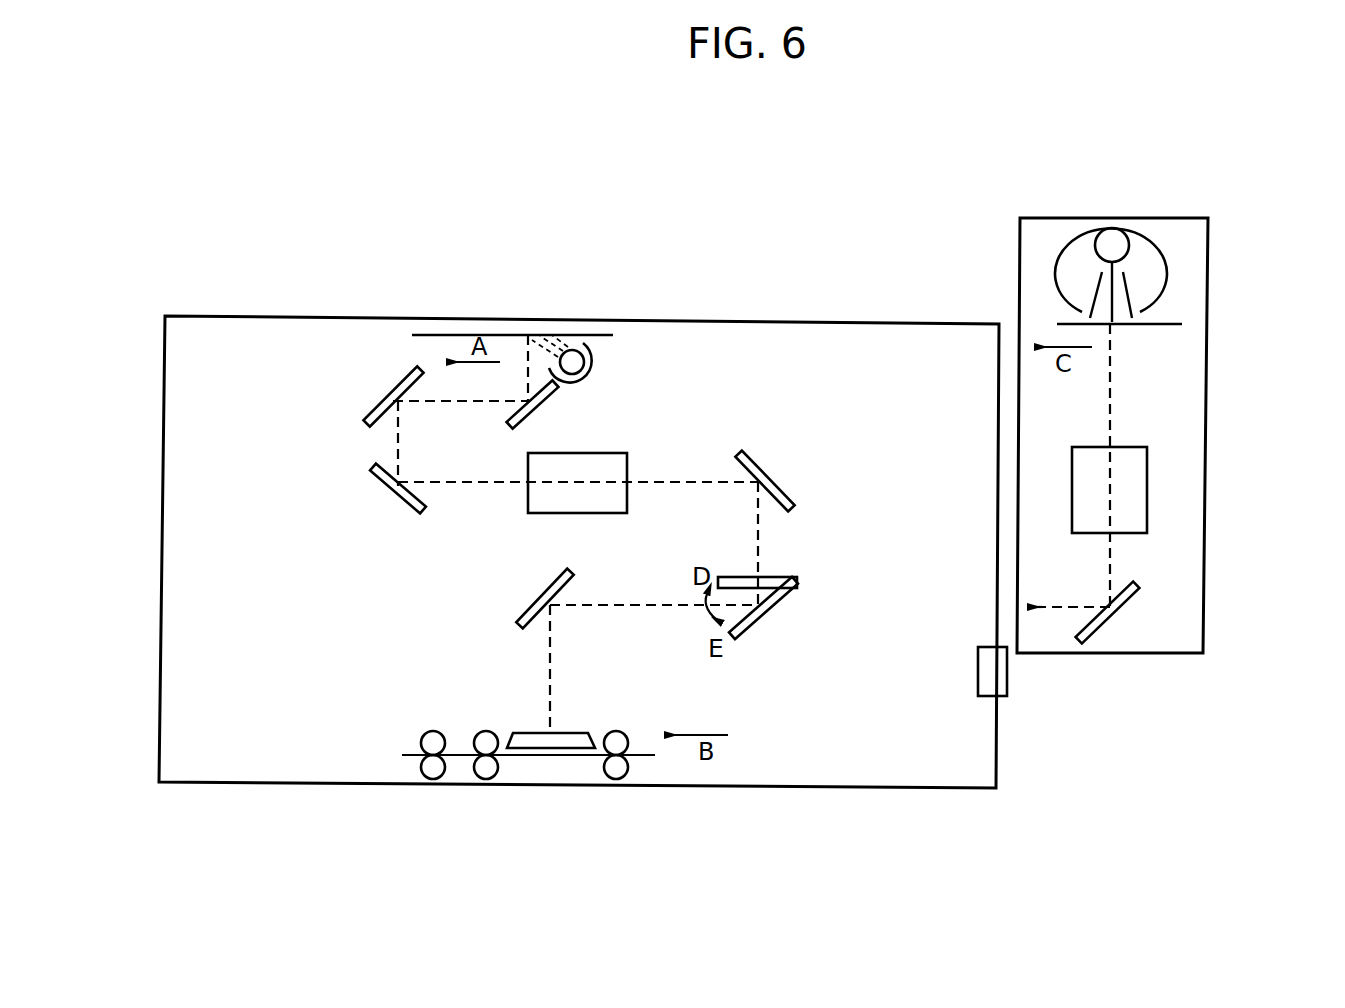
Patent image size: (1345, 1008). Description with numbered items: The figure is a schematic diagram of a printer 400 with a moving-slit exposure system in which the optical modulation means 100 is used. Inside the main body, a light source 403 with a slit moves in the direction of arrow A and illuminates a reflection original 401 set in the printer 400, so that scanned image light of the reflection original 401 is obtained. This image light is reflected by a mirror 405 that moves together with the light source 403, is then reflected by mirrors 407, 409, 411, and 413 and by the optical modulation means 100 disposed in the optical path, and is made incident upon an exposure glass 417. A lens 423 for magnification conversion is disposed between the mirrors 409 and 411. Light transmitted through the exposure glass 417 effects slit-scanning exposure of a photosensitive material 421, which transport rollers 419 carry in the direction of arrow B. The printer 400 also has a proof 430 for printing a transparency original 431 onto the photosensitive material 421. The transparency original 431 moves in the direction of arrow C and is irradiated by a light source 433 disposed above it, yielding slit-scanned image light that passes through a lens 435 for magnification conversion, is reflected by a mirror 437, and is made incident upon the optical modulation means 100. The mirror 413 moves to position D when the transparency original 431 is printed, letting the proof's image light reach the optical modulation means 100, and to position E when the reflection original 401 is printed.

The printer 400 is at (499, 271).
The reflection original 401 is at (548, 335).
The light source 403 is at (603, 363).
The mirror 405 is at (548, 398).
The mirror 407 is at (393, 392).
The mirror 409 is at (385, 487).
The lens for magnification conversion 423 is at (628, 470).
The mirror 411 is at (763, 470).
The mirror 413 is at (770, 577).
The optical modulation means 100 is at (577, 575).
The exposure glass 417 is at (573, 732).
The transport rollers 419 is at (430, 781).
The photosensitive material 421 is at (410, 752).
The proof 430 is at (1105, 198).
The transparency original 431 is at (1167, 322).
The light source 433 is at (1180, 267).
The lens for magnification conversion 435 is at (1148, 480).
The mirror 437 is at (1115, 612).